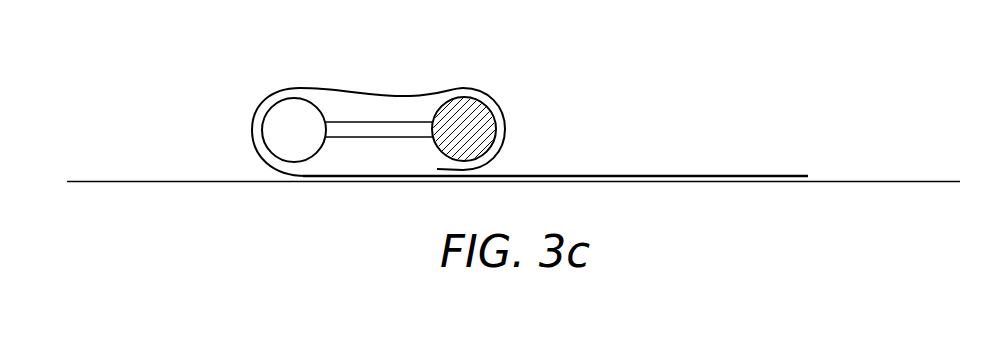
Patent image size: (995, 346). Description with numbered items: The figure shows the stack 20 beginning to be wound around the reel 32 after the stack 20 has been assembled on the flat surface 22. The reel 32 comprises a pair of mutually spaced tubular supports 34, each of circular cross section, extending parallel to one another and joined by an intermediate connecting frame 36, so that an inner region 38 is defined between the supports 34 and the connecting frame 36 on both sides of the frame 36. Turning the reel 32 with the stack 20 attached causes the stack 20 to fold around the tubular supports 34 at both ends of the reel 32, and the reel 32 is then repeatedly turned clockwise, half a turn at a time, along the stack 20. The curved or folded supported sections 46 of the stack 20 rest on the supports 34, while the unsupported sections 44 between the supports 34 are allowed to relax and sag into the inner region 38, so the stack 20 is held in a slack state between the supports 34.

The stack 20 is at (748, 175).
The flat surface 22 is at (92, 181).
The reel 32 is at (263, 97).
The tubular supports 34 is at (297, 103).
The connecting frame 36 is at (363, 138).
The inner region 38 is at (412, 111).
The unsupported sections 44 is at (358, 92).
The supported sections 46 is at (250, 133).